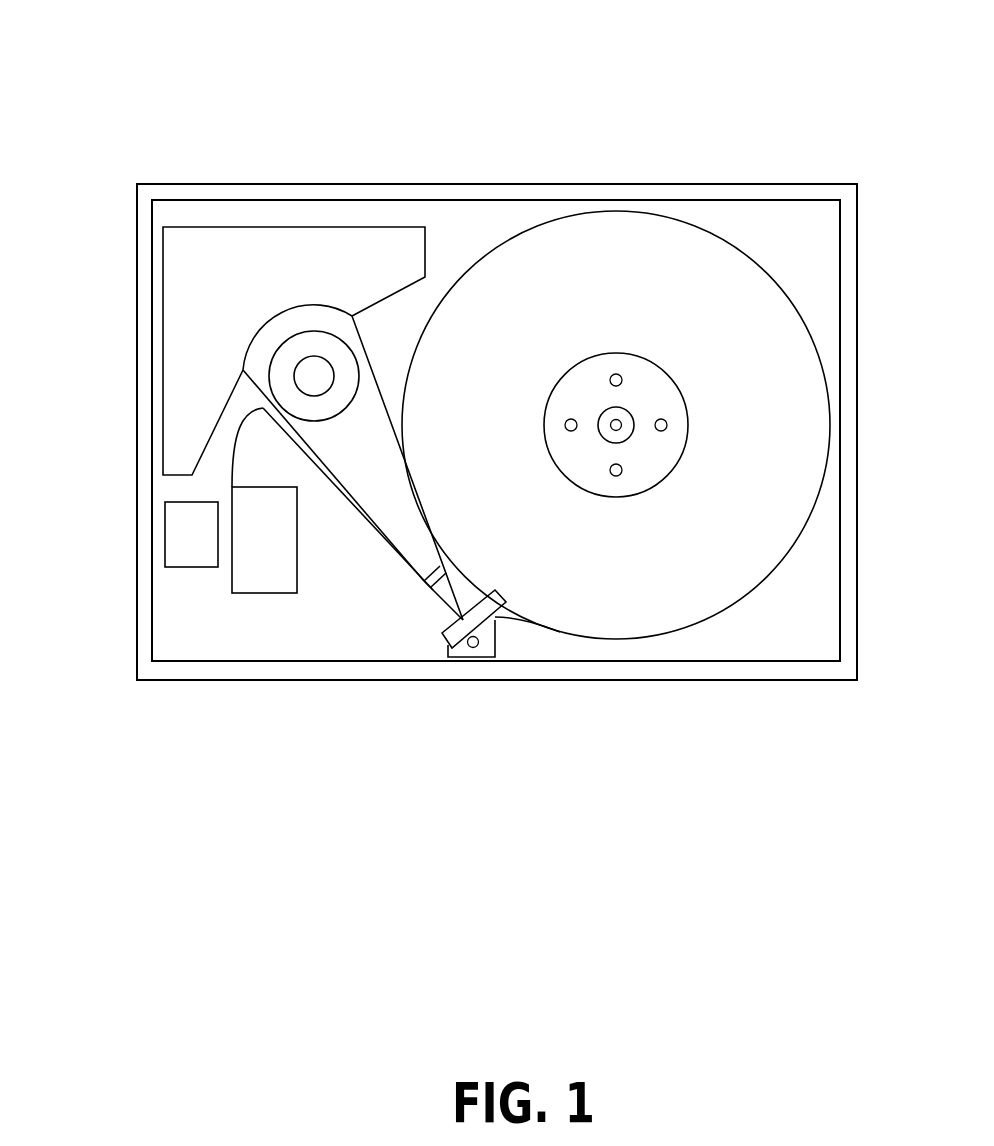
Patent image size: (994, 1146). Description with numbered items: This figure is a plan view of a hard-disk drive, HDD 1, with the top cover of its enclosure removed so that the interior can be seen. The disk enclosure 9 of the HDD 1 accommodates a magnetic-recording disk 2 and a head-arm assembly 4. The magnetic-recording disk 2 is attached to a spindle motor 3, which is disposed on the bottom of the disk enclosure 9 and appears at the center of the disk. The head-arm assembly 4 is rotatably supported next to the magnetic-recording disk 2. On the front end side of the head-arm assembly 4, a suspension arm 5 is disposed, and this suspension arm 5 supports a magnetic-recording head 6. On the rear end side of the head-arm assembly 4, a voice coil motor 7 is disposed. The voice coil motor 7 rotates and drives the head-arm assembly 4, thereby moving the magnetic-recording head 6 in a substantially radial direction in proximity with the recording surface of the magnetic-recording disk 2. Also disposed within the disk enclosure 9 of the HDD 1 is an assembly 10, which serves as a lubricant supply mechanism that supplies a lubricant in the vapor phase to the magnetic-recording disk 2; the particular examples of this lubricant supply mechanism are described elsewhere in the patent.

The hard-disk drive 1 is at (754, 87).
The magnetic-recording disk 2 is at (620, 248).
The spindle motor 3 is at (647, 403).
The head-arm assembly 4 is at (373, 470).
The suspension arm 5 is at (437, 588).
The magnetic-recording head 6 is at (435, 617).
The voice coil motor 7 is at (250, 247).
The disk enclosure 9 is at (663, 668).
The assembly 10 is at (192, 538).